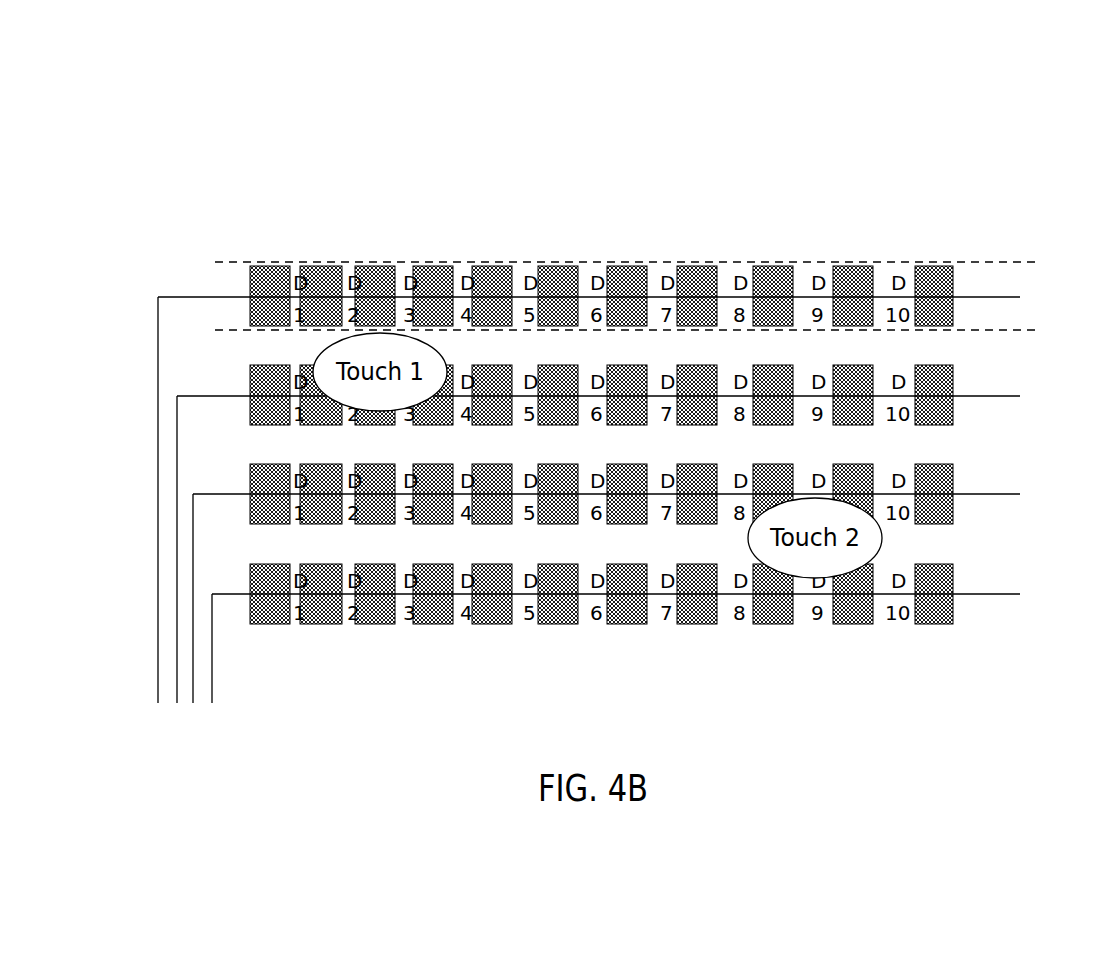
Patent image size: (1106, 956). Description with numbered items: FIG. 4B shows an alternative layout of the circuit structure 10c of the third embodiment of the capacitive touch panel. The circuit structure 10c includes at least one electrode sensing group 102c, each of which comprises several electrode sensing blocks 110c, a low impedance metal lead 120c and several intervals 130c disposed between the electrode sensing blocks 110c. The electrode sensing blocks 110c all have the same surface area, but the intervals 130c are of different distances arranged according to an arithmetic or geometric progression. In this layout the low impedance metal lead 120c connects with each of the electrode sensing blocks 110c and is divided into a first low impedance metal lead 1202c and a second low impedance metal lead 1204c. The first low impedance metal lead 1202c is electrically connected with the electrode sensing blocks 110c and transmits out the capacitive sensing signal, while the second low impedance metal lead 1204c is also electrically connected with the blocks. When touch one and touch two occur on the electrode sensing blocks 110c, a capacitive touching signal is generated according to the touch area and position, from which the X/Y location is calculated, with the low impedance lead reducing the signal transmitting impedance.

The circuit structure 10c is at (128, 203).
The low impedance metal lead 120c is at (443, 168).
The first low impedance metal lead 1202c is at (160, 297).
The second low impedance metal lead 1204c is at (537, 267).
The interval 130c is at (882, 272).
The electrode sensing block 110c is at (950, 265).
The electrode sensing group 102c is at (990, 278).